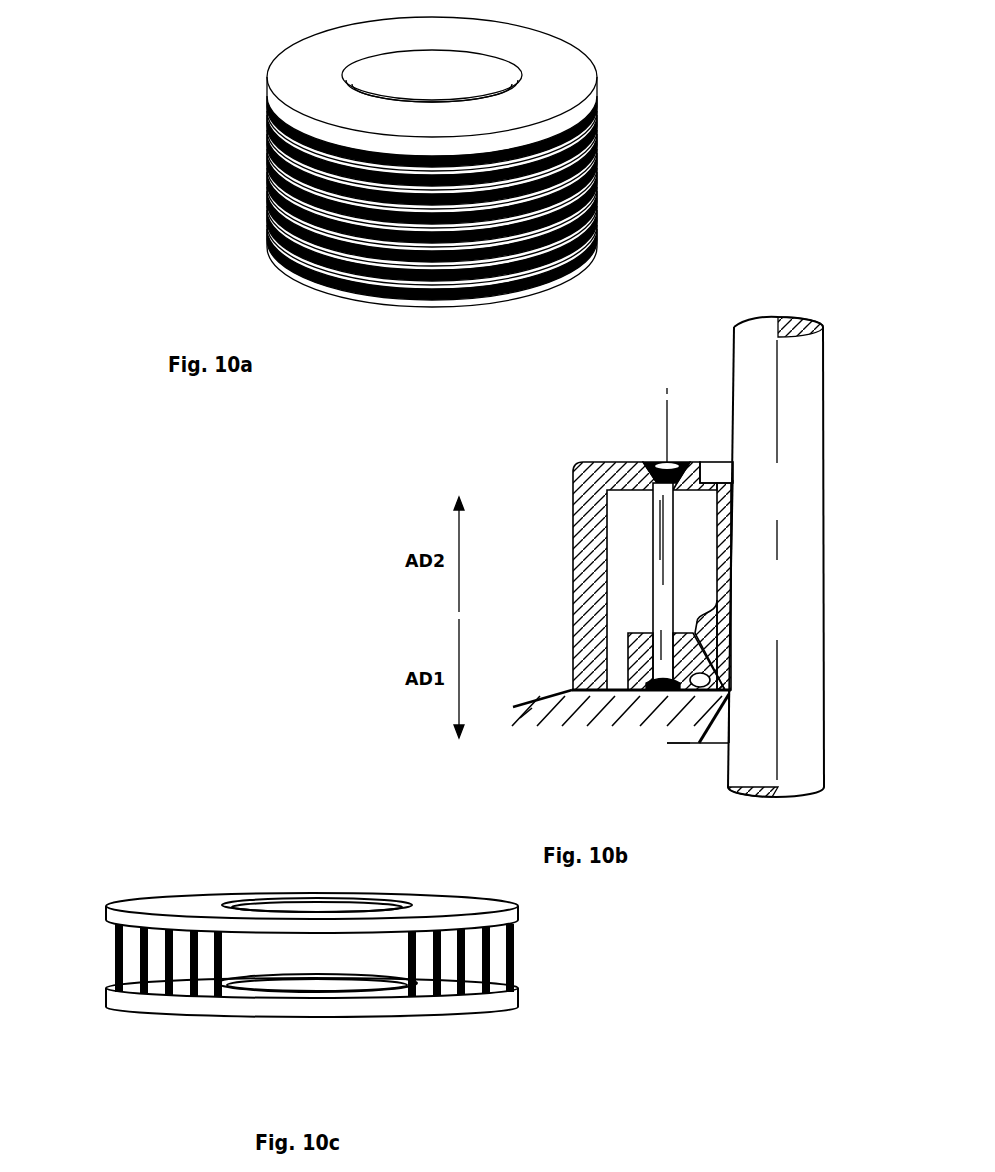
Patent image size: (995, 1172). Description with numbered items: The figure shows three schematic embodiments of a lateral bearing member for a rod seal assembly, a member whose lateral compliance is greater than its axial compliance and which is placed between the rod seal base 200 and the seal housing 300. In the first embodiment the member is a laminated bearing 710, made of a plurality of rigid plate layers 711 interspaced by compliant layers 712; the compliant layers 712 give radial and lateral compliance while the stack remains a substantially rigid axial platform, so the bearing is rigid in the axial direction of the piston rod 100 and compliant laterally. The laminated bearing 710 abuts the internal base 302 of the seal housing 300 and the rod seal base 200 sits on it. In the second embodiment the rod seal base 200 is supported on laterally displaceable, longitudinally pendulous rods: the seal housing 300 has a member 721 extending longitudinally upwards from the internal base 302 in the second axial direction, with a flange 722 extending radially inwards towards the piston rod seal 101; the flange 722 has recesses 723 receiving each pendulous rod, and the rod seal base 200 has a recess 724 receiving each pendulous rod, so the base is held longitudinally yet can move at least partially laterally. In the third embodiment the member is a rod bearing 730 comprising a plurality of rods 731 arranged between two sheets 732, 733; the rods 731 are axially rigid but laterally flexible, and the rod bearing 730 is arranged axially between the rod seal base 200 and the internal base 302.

In FIG. 10a, the laminated bearing 710 is at (213, 122).
In FIG. 10a, the rigid plate layers 711 is at (270, 236).
In FIG. 10a, the compliant layers 712 is at (270, 222).
In FIG. 10b, the piston rod 100 is at (767, 373).
In FIG. 10b, the piston rod seal 101 is at (735, 553).
In FIG. 10b, the rod seal base 200 is at (728, 654).
In FIG. 10b, the seal housing 300 is at (660, 700).
In FIG. 10b, the internal base 302 is at (612, 692).
In FIG. 10b, the member 721 is at (580, 517).
In FIG. 10b, the flange 722 is at (625, 472).
In FIG. 10b, the recesses 723 is at (640, 462).
In FIG. 10b, the recess 724 is at (667, 743).
In FIG. 10b, the rod bearing 730 is at (658, 608).
In FIG. 10c, the rod bearing 730 is at (197, 872).
In FIG. 10c, the rods 731 is at (490, 963).
In FIG. 10c, the sheet 732 is at (460, 918).
In FIG. 10c, the sheet 733 is at (487, 1005).